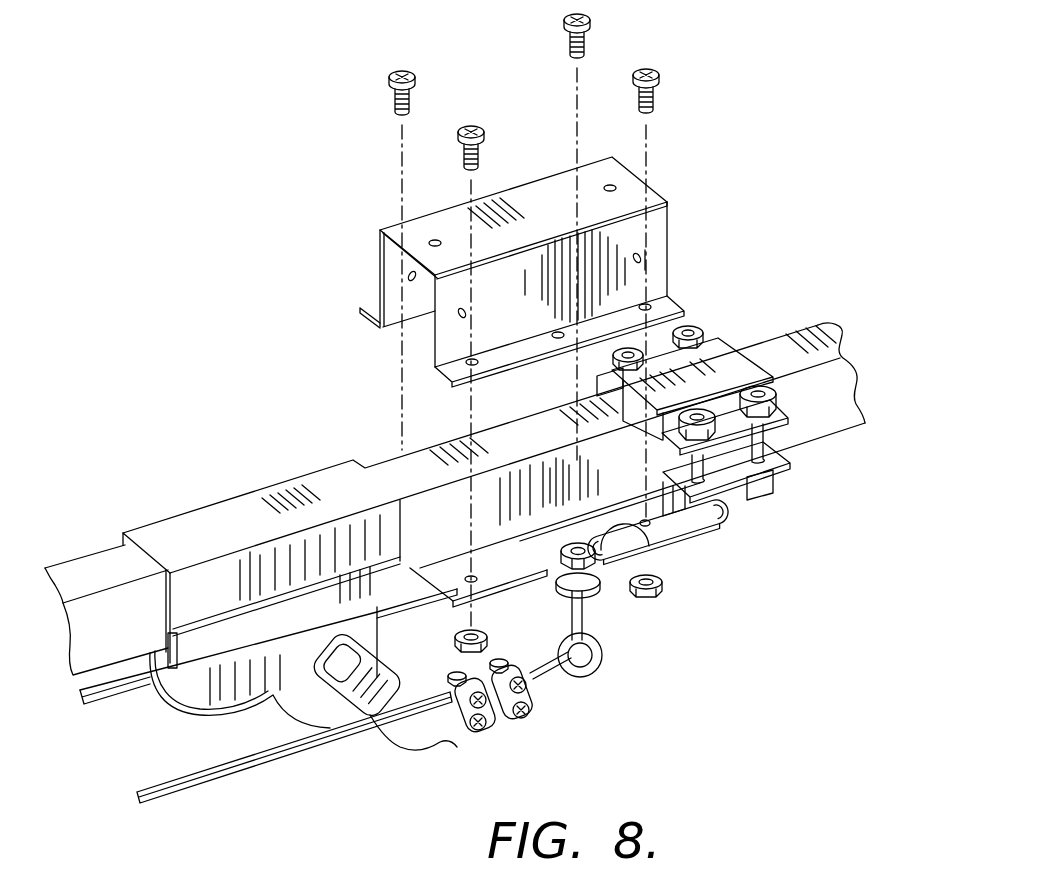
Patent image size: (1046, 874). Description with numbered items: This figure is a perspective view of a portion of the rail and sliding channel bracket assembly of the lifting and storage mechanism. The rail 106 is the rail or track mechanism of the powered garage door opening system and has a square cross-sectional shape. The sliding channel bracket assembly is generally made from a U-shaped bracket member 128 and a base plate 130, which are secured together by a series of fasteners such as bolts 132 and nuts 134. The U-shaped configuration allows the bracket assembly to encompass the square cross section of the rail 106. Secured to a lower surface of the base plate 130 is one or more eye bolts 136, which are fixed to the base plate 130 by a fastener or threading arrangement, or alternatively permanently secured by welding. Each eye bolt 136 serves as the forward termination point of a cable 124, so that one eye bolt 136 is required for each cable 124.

The rail 106 is at (763, 348).
The cable 124 is at (318, 742).
The U-shaped bracket member 128 is at (555, 182).
The base plate 130 is at (660, 543).
The bolts 132 is at (472, 124).
The nuts 134 is at (482, 634).
The eye bolt 136 is at (597, 660).